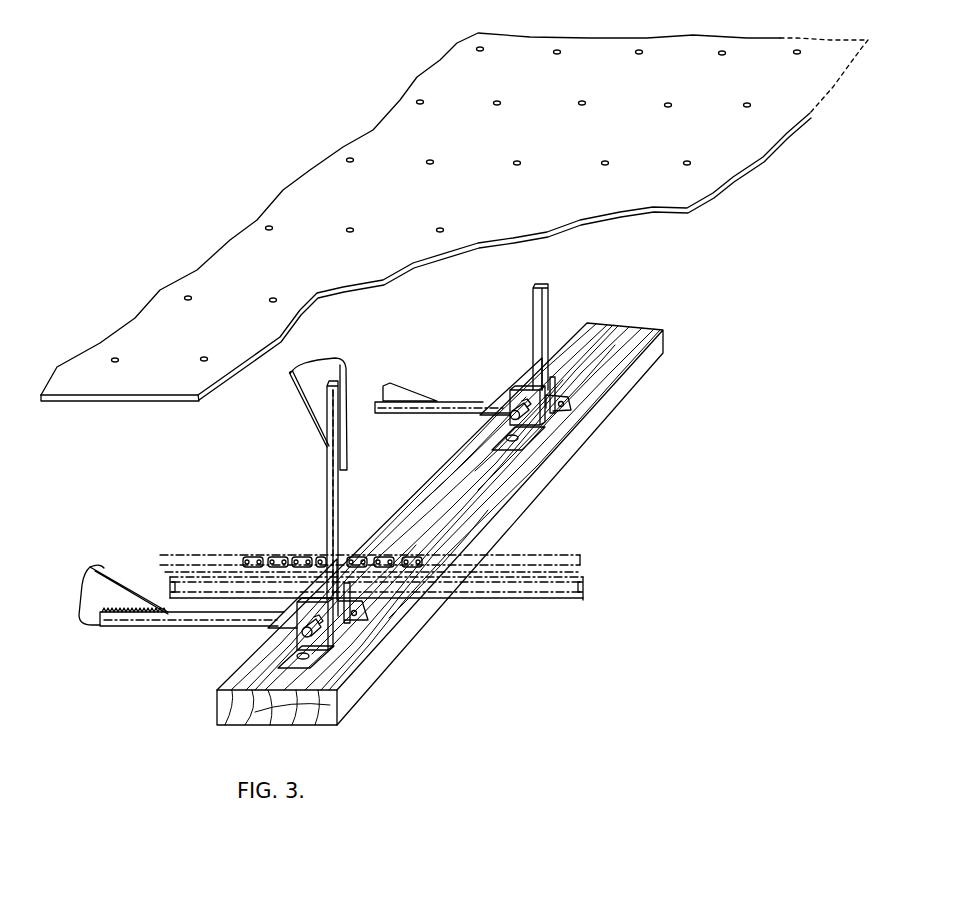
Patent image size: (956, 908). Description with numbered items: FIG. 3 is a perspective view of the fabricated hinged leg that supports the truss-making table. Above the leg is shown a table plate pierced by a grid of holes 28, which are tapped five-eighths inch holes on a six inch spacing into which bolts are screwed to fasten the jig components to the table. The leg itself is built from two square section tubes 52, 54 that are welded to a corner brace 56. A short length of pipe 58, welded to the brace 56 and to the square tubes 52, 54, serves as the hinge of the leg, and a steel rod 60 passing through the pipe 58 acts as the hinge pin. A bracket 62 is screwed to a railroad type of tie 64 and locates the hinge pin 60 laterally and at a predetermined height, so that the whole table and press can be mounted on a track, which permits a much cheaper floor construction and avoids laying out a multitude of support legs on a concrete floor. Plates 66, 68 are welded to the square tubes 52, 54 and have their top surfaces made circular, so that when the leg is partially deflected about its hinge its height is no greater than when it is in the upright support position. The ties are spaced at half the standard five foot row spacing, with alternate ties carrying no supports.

The holes 28 is at (722, 53).
The square section tube 52 is at (328, 487).
The square section tube 54 is at (202, 623).
The corner brace 56 is at (325, 580).
The short length of pipe 58 is at (349, 620).
The steel rod 60 is at (302, 630).
The bracket 62 is at (318, 663).
The railroad type of tie 64 is at (365, 677).
The plate 66 is at (302, 396).
The plate 68 is at (102, 586).